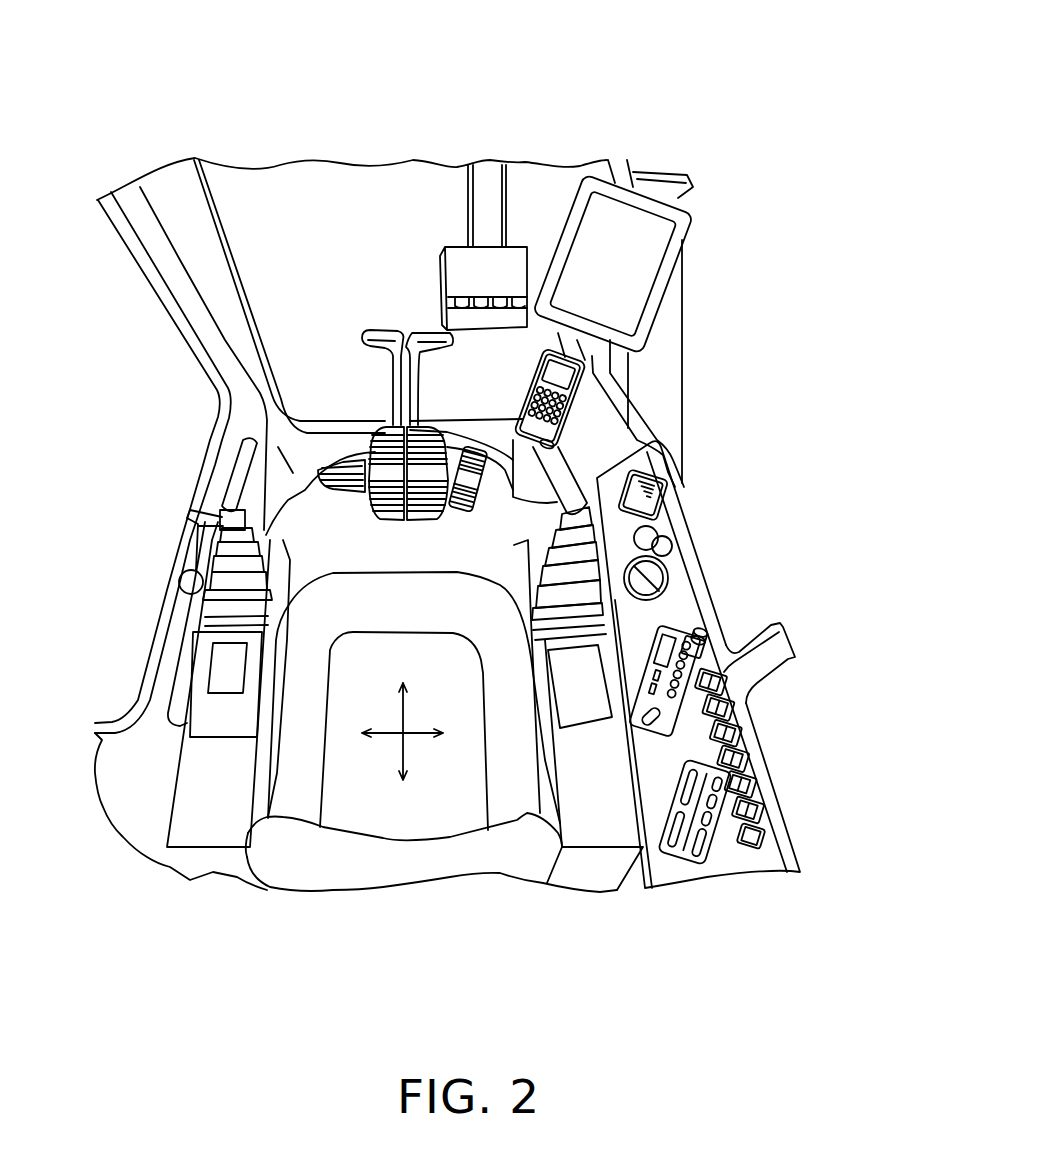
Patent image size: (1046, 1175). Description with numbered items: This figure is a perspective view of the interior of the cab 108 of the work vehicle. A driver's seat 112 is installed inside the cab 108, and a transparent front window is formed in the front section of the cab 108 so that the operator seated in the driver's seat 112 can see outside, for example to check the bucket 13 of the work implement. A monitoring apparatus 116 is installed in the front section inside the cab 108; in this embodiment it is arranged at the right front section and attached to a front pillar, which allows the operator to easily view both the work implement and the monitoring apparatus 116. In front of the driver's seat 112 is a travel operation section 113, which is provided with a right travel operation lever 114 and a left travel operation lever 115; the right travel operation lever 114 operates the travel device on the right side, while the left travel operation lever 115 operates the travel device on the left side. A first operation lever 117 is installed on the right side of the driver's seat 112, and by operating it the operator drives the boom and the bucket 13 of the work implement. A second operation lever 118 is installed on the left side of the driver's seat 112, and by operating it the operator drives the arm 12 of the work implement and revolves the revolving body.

The cab 108 is at (735, 66).
The arm 12 is at (490, 173).
The bucket 13 is at (510, 262).
The driver's seat 112 is at (350, 813).
The travel operation section 113 is at (412, 318).
The right travel operation lever 114 is at (428, 333).
The left travel operation lever 115 is at (378, 338).
The monitoring apparatus 116 is at (640, 280).
The first operation lever 117 is at (563, 470).
The second operation lever 118 is at (247, 467).